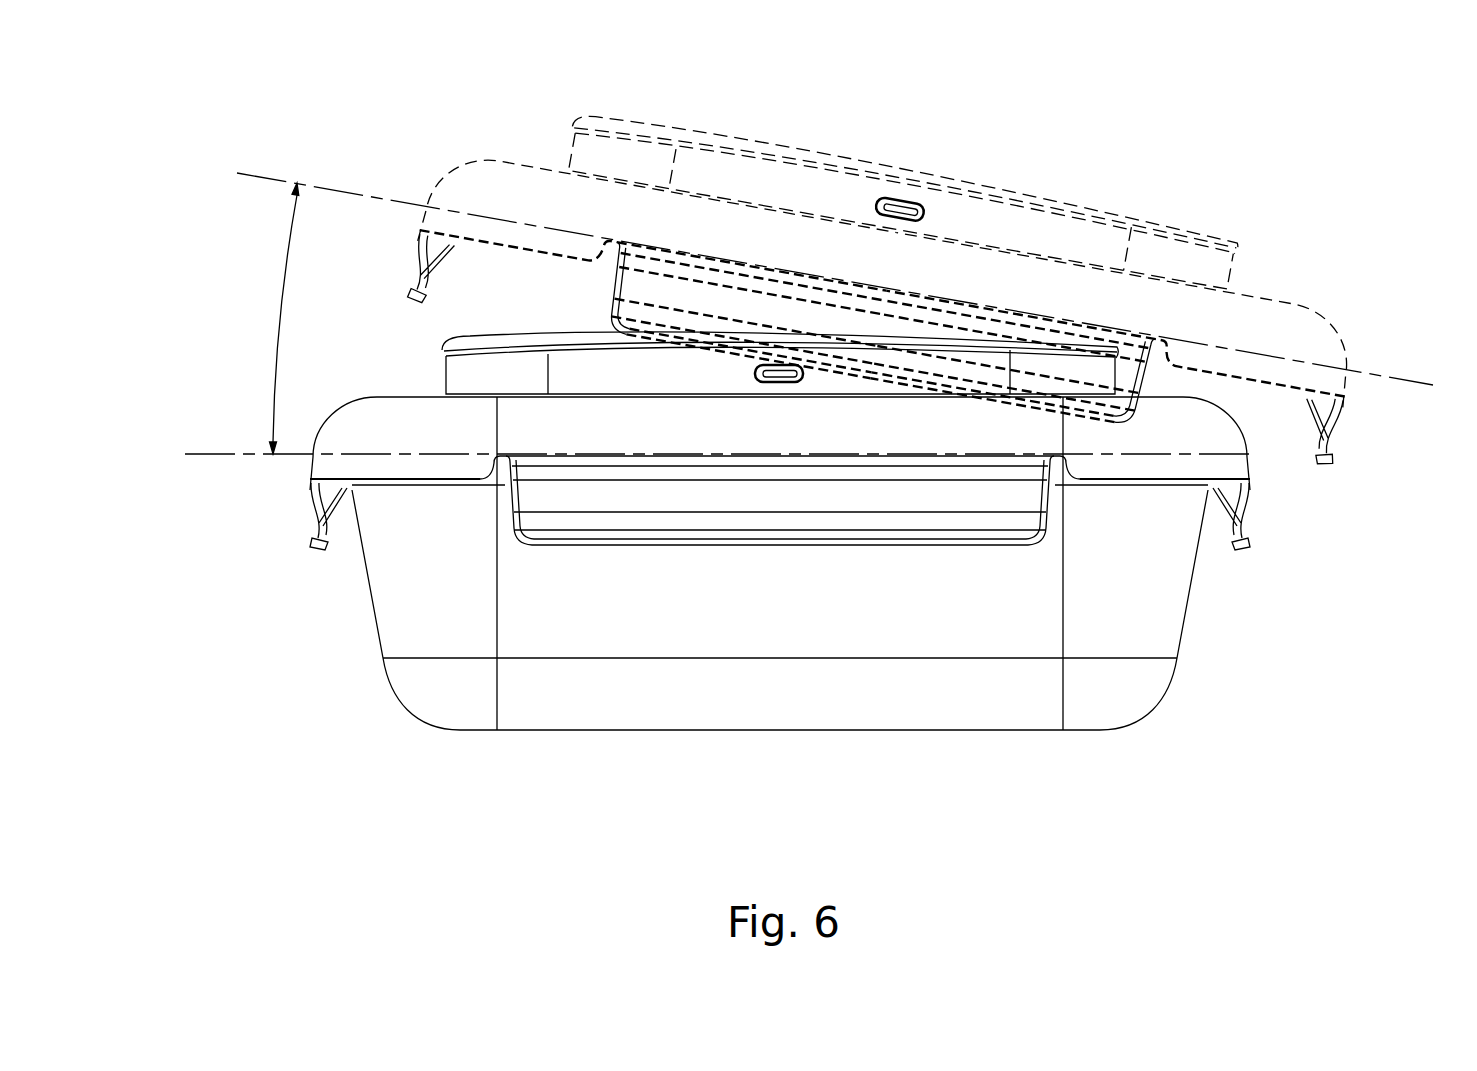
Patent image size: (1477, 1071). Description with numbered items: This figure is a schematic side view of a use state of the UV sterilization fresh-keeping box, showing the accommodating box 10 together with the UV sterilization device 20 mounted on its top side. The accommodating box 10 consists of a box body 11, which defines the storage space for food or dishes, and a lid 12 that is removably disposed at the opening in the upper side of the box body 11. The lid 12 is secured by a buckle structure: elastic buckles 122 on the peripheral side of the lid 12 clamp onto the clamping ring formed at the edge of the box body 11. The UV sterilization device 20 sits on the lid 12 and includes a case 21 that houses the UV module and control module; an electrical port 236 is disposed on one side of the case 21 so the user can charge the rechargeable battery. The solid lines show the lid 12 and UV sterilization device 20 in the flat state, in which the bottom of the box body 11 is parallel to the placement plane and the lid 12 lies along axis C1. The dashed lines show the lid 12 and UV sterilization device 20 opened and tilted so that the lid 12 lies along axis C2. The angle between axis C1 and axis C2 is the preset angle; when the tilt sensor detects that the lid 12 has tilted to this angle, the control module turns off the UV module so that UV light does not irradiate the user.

The accommodating box 10 is at (1420, 556).
The box body 11 is at (1190, 617).
The lid 12 is at (1258, 500).
The elastic buckles 122 is at (313, 505).
The UV sterilization device 20 is at (523, 337).
The case 21 is at (528, 378).
The electrical port 236 is at (780, 383).
The axis of the lid in the flat state C1 is at (217, 455).
The axis of the lid in the tilting state C2 is at (262, 176).